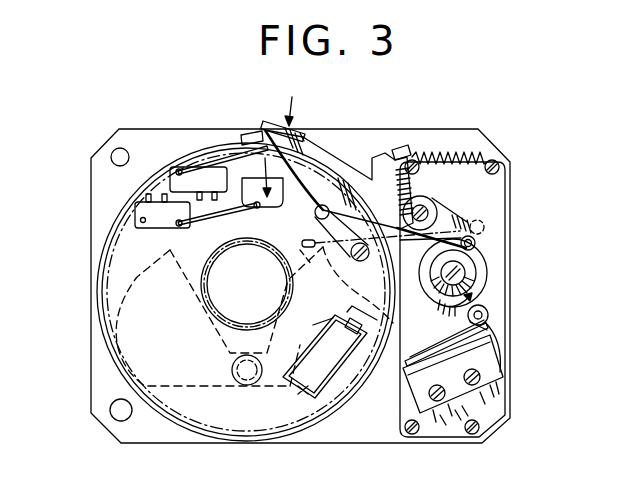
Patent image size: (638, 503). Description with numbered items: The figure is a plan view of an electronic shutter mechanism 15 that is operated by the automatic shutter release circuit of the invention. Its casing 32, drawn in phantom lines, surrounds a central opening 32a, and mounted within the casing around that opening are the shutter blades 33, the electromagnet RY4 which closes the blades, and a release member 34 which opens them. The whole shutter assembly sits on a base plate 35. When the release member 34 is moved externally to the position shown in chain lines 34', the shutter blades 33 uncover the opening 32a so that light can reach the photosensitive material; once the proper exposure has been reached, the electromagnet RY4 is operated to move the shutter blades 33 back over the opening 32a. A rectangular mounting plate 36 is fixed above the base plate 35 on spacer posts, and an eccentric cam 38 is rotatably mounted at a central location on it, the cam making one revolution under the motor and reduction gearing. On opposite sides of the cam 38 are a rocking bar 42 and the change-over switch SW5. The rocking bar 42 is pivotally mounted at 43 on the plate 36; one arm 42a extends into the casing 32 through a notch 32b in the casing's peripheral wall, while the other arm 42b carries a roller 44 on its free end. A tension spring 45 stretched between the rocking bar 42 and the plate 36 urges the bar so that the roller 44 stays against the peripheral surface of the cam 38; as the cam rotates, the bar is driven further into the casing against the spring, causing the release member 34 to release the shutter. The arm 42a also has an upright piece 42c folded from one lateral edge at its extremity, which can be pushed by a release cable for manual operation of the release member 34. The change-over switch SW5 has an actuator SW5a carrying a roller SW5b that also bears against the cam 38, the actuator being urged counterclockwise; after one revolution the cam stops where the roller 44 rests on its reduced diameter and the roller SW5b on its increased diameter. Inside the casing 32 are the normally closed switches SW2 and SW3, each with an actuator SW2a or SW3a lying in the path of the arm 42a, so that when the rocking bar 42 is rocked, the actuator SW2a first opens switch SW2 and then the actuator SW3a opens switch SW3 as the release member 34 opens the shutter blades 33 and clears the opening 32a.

The electronic shutter mechanism 15 is at (91, 297).
The casing 32 is at (123, 223).
The central opening 32a is at (197, 313).
The notch 32b is at (250, 134).
The shutter blades 33 is at (197, 385).
The release member 34 is at (344, 233).
The release member position 34' is at (323, 277).
The base plate 35 is at (377, 435).
The mounting plate 36 is at (490, 286).
The eccentric cam 38 is at (440, 298).
The rocking bar 42 is at (318, 170).
The arm of rocking bar 42a is at (262, 123).
The other arm of rocking bar 42b is at (463, 212).
The upright piece 42c is at (300, 133).
The pivot 43 is at (432, 196).
The roller 44 is at (478, 238).
The tension spring 45 is at (430, 155).
The switch SW2 is at (172, 185).
The actuator of switch SW2 SW2a is at (228, 192).
The switch SW3 is at (147, 228).
The actuator of switch SW3 SW3a is at (247, 284).
The change-over switch SW5 is at (490, 370).
The actuator of switch SW5 SW5a is at (488, 363).
The roller of actuator SW5a SW5b is at (490, 312).
The electromagnet RY4 is at (290, 410).